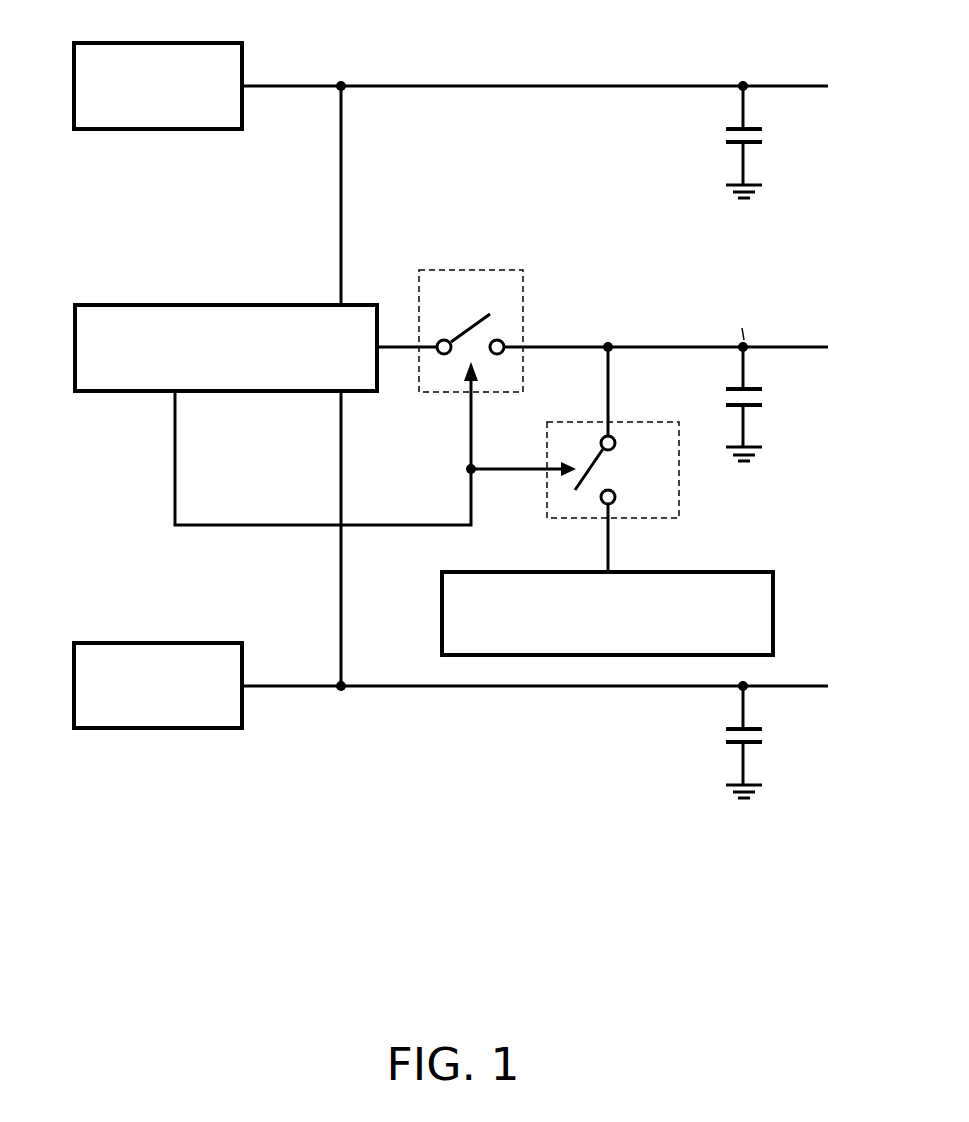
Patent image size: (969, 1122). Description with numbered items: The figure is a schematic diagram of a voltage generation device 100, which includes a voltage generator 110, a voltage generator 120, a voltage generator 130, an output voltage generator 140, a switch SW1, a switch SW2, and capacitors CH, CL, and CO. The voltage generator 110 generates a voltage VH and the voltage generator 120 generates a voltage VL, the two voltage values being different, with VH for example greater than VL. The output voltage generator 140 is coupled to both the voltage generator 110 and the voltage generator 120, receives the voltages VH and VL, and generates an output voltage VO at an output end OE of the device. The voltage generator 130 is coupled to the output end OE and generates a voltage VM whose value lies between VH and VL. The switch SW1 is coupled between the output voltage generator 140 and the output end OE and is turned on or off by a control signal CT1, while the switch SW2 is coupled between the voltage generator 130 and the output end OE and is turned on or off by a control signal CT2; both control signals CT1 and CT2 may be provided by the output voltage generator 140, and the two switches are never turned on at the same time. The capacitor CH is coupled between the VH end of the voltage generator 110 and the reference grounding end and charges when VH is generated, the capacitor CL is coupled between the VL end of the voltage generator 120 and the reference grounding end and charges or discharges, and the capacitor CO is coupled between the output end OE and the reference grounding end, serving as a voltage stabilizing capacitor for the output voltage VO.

The voltage generation device 100 is at (897, 942).
The voltage generator 110 is at (203, 43).
The voltage generator 120 is at (203, 643).
The voltage generator 130 is at (733, 572).
The output voltage generator 140 is at (117, 305).
The switch SW1 is at (471, 331).
The switch SW2 is at (613, 470).
The control signal CT1 is at (470, 437).
The control signal CT2 is at (508, 472).
The capacitor CH is at (763, 163).
The capacitor CO is at (763, 425).
The capacitor CL is at (761, 763).